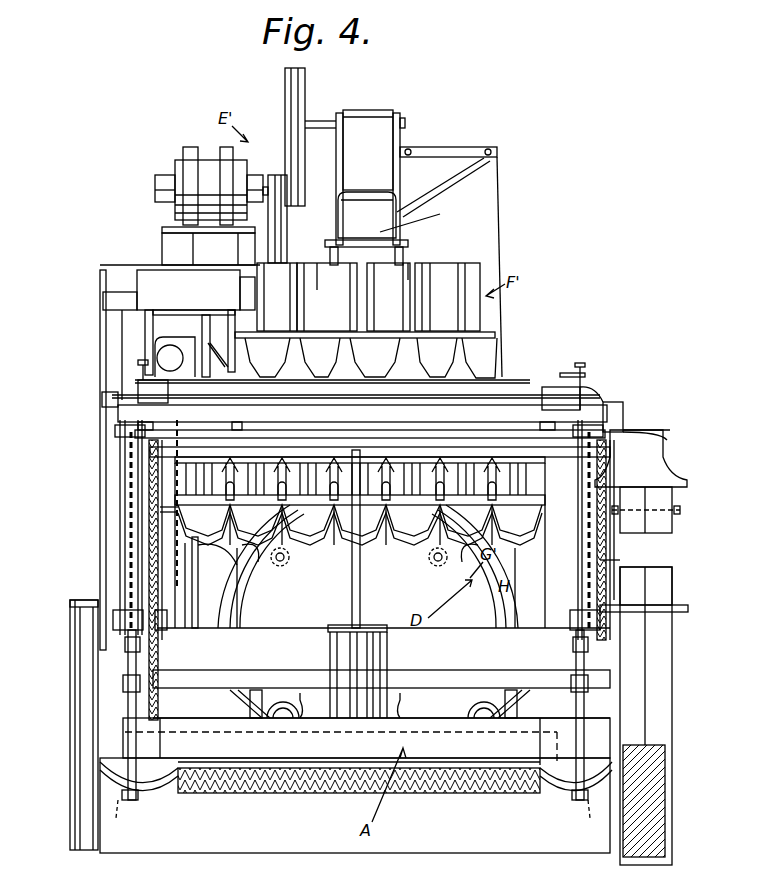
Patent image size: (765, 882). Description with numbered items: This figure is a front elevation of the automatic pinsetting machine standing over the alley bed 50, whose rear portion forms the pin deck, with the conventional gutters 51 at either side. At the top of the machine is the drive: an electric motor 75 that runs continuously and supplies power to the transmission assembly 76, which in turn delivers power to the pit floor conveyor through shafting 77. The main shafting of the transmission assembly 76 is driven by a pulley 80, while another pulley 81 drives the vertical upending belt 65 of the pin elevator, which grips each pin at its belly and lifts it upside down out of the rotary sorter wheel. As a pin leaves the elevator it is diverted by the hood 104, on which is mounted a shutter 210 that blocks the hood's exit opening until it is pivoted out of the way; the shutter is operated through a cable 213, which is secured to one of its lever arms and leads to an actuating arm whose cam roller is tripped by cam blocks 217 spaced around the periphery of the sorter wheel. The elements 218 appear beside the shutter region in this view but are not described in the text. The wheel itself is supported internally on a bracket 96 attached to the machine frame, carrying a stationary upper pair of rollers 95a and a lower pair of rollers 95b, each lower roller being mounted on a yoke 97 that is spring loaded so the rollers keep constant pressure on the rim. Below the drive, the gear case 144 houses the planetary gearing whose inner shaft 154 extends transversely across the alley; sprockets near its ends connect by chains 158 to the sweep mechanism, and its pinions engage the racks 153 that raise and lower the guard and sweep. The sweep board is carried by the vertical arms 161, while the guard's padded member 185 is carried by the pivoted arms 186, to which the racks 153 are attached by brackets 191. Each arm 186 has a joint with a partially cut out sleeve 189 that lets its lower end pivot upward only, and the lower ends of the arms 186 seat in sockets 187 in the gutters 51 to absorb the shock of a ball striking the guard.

The pulley 81 is at (285, 85).
The upending belt 65 is at (366, 187).
The cable 213 is at (498, 200).
The hood 104 is at (426, 218).
The electric motor 75 is at (205, 152).
The pulley 80 is at (288, 250).
The transmission assembly 76 is at (150, 278).
The shutter 210 is at (366, 312).
The bearing 218 is at (318, 262).
The gear case 144 is at (166, 438).
The inner shaft 154 is at (380, 444).
The chain 158 is at (128, 498).
The rack 153 is at (145, 548).
The shafting 77 is at (198, 594).
The upper roller 95a is at (290, 560).
The cam block 217 is at (252, 560).
The bracket 96 is at (368, 566).
The bracket 191 is at (125, 646).
The partially cut out sleeve 189 is at (123, 683).
The pivoted arm 186 is at (128, 710).
The vertical arm 161 is at (157, 668).
The lower roller 95b is at (288, 694).
The yoke 97 is at (353, 705).
The padded member 185 is at (333, 726).
The alley bed 50 is at (298, 772).
The gutter 51 is at (148, 780).
The socket 187 is at (363, 817).